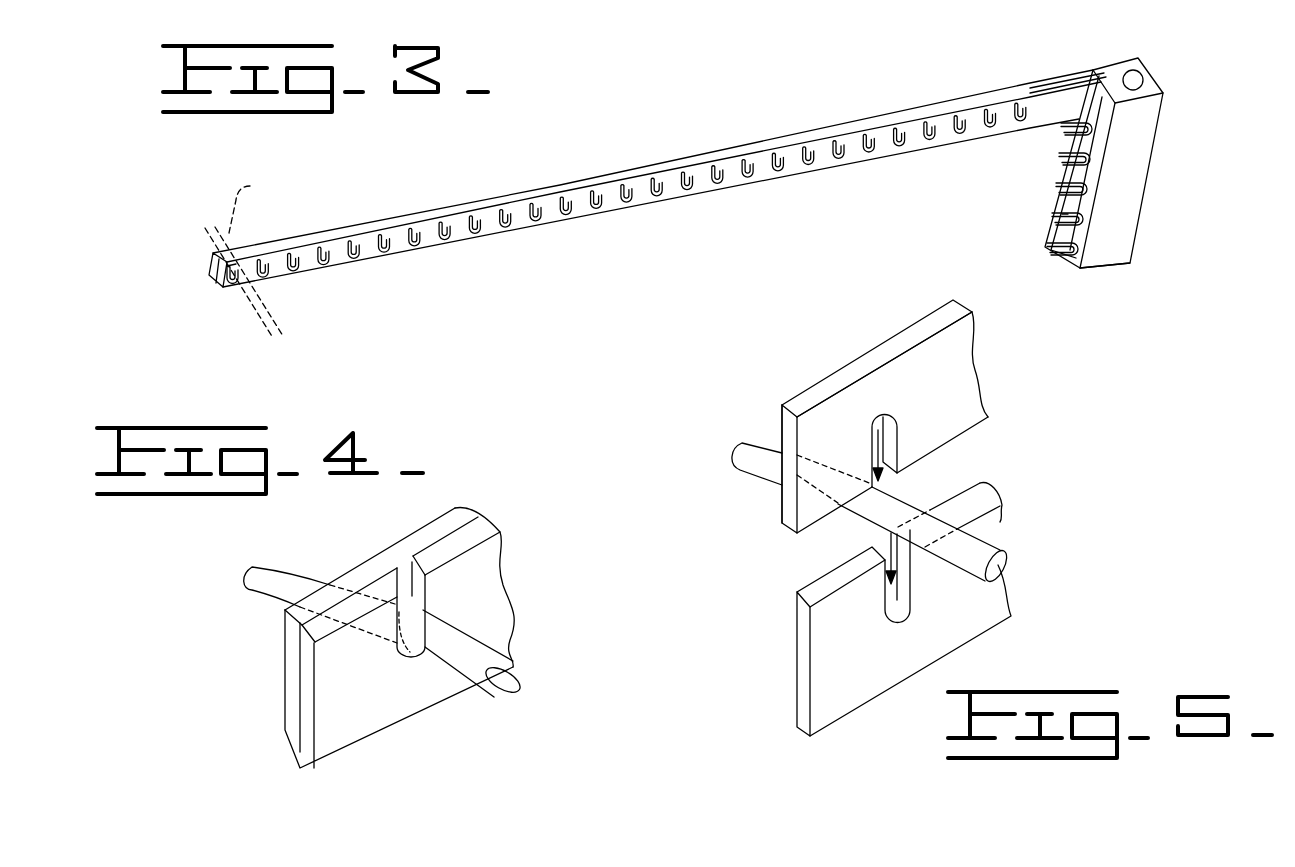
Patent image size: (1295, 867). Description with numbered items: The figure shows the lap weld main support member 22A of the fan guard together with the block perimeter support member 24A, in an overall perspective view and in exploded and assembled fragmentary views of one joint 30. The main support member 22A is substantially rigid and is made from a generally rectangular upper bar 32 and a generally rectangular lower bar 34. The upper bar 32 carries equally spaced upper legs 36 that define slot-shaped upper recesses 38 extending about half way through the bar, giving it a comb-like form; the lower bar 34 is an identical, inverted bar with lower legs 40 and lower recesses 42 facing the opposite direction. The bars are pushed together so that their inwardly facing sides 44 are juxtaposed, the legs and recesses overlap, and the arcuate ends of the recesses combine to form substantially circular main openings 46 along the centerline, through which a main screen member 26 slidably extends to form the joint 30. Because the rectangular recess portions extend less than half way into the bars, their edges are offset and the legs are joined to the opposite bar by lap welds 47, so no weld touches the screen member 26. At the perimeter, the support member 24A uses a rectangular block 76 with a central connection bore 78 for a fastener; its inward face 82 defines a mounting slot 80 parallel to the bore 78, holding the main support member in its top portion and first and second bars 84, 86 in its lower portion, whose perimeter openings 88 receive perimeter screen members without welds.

In FIG. 3, the lap weld main support member 22A is at (575, 167).
In FIG. 3, the block perimeter support member 24A is at (1196, 139).
In FIG. 3, the main screen member 26 is at (249, 204).
In FIG. 4, the main screen member 26 is at (288, 578).
In FIG. 3, the joint 30 is at (226, 290).
In FIG. 4, the joint 30 is at (485, 641).
In FIG. 5, the joint 30 is at (856, 527).
In FIG. 3, the upper bar 32 is at (713, 158).
In FIG. 4, the upper bar 32 is at (364, 568).
In FIG. 5, the upper bar 32 is at (883, 353).
In FIG. 3, the lower bar 34 is at (916, 148).
In FIG. 4, the lower bar 34 is at (332, 734).
In FIG. 5, the lower bar 34 is at (836, 698).
In FIG. 5, the upper leg 36 is at (958, 370).
In FIG. 5, the upper recess 38 is at (887, 434).
In FIG. 3, the lower leg 40 is at (880, 141).
In FIG. 5, the lower leg 40 is at (985, 516).
In FIG. 3, the lower recess 42 is at (808, 149).
In FIG. 4, the lower recess 42 is at (408, 600).
In FIG. 5, the lower recess 42 is at (903, 583).
In FIG. 5, the inwardly facing side 44 is at (827, 416).
In FIG. 3, the main opening 46 is at (381, 252).
In FIG. 4, the main opening 46 is at (397, 658).
In FIG. 4, the lap weld 47 is at (458, 550).
In FIG. 3, the rectangular block 76 is at (1130, 222).
In FIG. 3, the connection bore 78 is at (1143, 78).
In FIG. 3, the mounting slot 80 is at (1092, 163).
In FIG. 3, the inward face 82 is at (1078, 252).
In FIG. 3, the first bar 84 is at (1065, 153).
In FIG. 3, the second bar 86 is at (1065, 259).
In FIG. 3, the perimeter opening 88 is at (1054, 212).